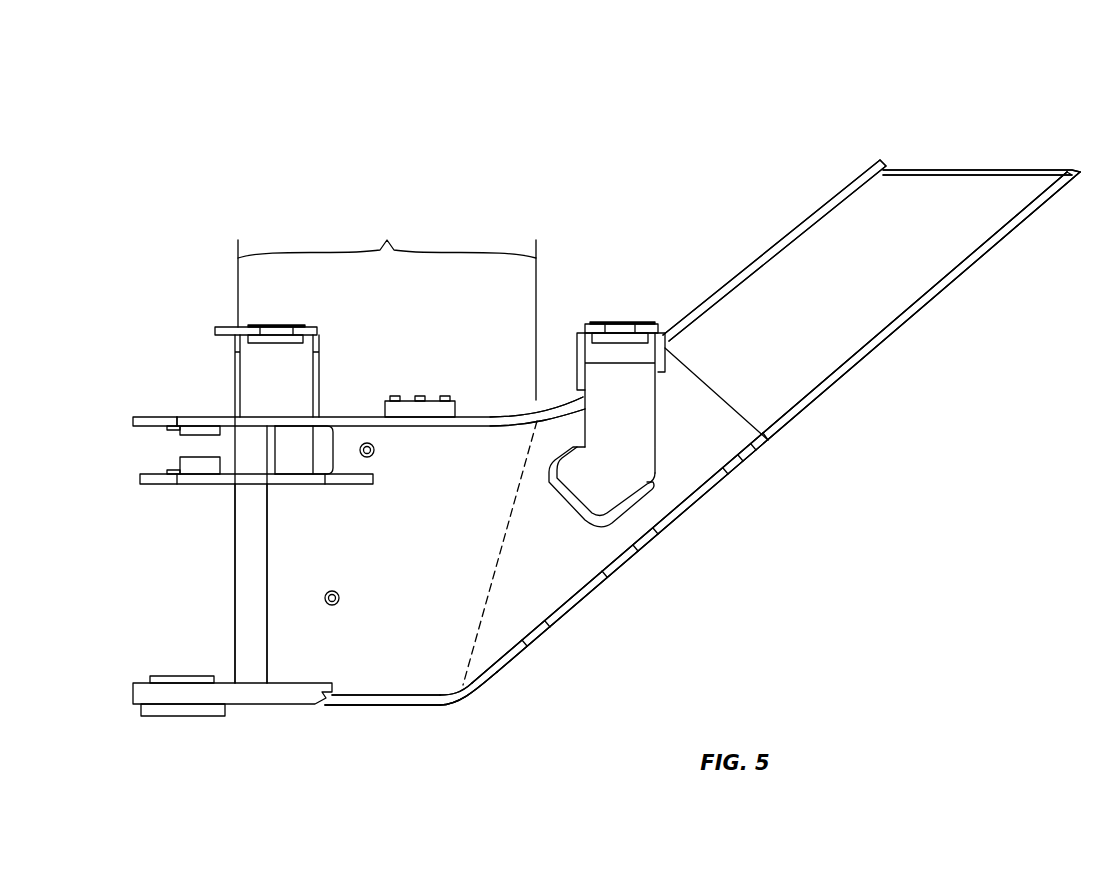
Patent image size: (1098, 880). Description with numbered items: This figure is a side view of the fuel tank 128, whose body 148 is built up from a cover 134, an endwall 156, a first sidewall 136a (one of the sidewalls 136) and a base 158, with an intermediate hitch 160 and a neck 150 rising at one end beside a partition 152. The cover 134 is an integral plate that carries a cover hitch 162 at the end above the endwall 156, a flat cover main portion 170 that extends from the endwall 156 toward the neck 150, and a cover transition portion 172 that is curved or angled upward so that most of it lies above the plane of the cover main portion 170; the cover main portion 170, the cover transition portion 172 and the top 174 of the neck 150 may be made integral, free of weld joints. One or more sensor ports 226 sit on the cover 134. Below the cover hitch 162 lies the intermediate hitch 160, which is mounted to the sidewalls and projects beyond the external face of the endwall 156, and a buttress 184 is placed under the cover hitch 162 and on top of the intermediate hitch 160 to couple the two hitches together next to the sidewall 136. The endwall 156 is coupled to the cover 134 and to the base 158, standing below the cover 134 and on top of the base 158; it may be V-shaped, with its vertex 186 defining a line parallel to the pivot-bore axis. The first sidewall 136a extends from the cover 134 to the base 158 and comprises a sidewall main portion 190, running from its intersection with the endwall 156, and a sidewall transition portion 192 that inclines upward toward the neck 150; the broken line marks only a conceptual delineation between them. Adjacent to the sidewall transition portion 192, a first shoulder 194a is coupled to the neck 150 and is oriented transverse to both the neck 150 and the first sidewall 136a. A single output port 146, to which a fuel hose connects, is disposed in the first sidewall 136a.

The fuel tank 128 is at (200, 206).
The cover 134 is at (350, 418).
The sidewall 136 is at (429, 603).
The first sidewall 136a is at (398, 748).
The output port 146 is at (330, 608).
The body 148 is at (500, 628).
The neck 150 is at (866, 322).
The partition 152 is at (975, 172).
The endwall 156 is at (233, 447).
The base 158 is at (391, 707).
The intermediate hitch 160 is at (135, 490).
The cover hitch 162 is at (135, 410).
The cover main portion 170 is at (486, 422).
The cover transition portion 172 is at (560, 400).
The top of the neck 174 is at (793, 235).
The buttress 184 is at (295, 460).
The vertex 186 is at (235, 635).
The sidewall main portion 190 is at (363, 632).
The sidewall transition portion 192 is at (573, 558).
The first shoulder 194a is at (723, 413).
The sensor port 226 is at (418, 400).